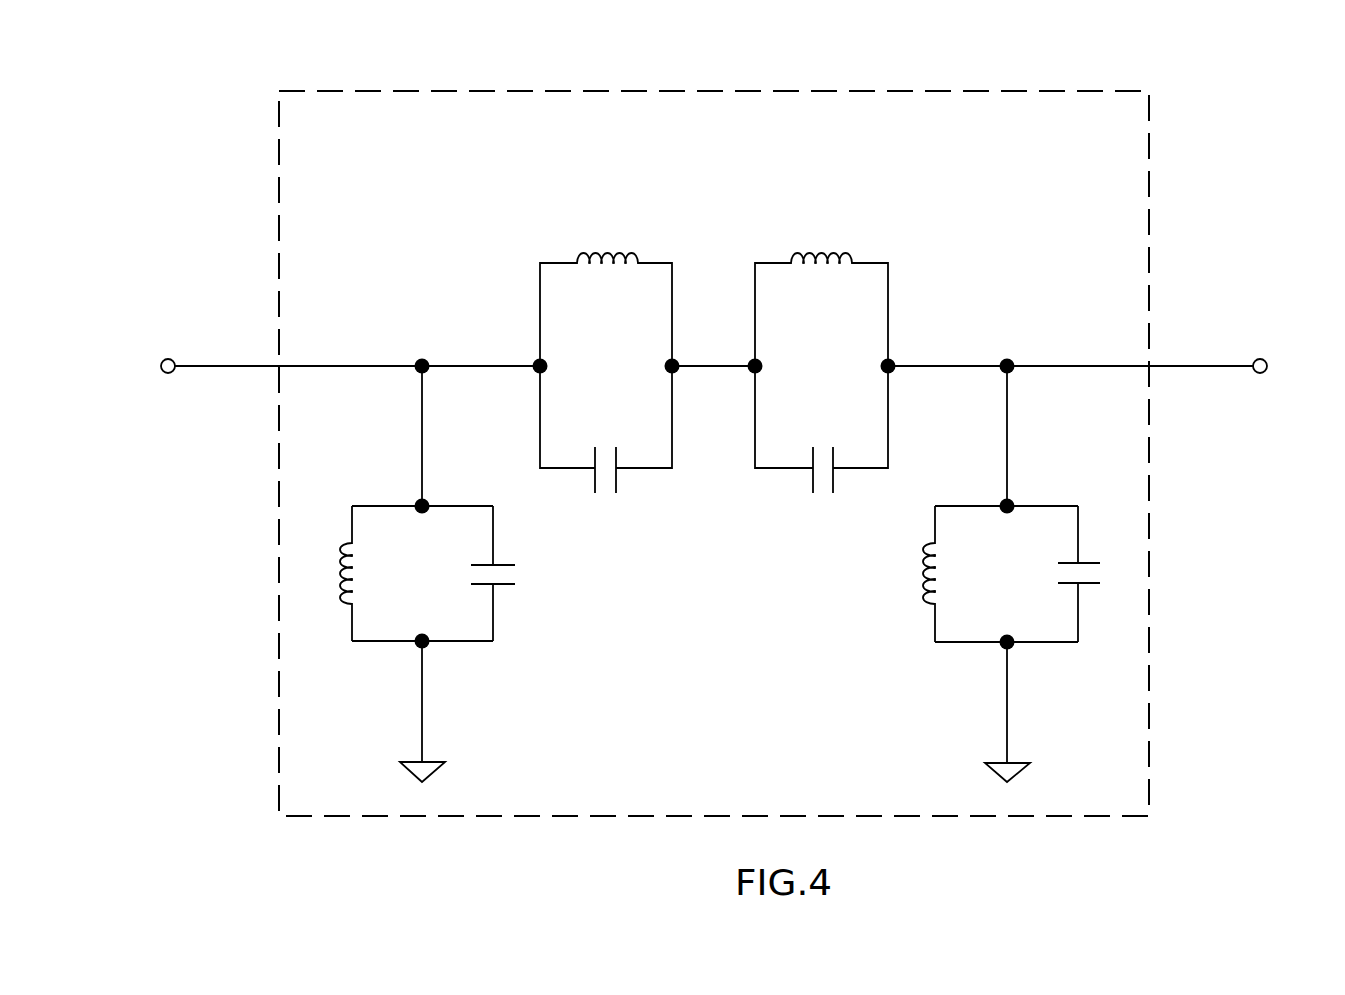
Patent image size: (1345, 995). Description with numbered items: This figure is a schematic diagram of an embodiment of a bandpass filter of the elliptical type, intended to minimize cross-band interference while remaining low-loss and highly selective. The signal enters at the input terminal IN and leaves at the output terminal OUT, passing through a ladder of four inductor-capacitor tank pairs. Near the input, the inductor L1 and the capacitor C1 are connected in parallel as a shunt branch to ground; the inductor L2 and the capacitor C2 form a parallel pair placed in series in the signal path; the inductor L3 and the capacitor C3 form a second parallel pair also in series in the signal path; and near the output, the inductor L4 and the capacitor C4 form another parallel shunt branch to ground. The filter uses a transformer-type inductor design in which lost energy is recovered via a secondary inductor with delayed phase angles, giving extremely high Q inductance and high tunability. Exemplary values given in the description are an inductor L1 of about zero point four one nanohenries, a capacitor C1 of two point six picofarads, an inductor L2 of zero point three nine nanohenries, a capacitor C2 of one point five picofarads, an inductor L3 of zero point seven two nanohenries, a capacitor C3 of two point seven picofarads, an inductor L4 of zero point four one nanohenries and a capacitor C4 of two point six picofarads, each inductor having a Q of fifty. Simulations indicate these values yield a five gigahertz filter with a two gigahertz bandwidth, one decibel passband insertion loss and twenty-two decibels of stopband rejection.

The input terminal IN is at (136, 367).
The output terminal OUT is at (1291, 367).
The inductor L1 is at (381, 573).
The capacitor C1 is at (489, 573).
The inductor L2 is at (606, 289).
The capacitor C2 is at (606, 429).
The inductor L3 is at (821, 289).
The capacitor C3 is at (821, 429).
The inductor L4 is at (946, 574).
The capacitor C4 is at (1078, 574).